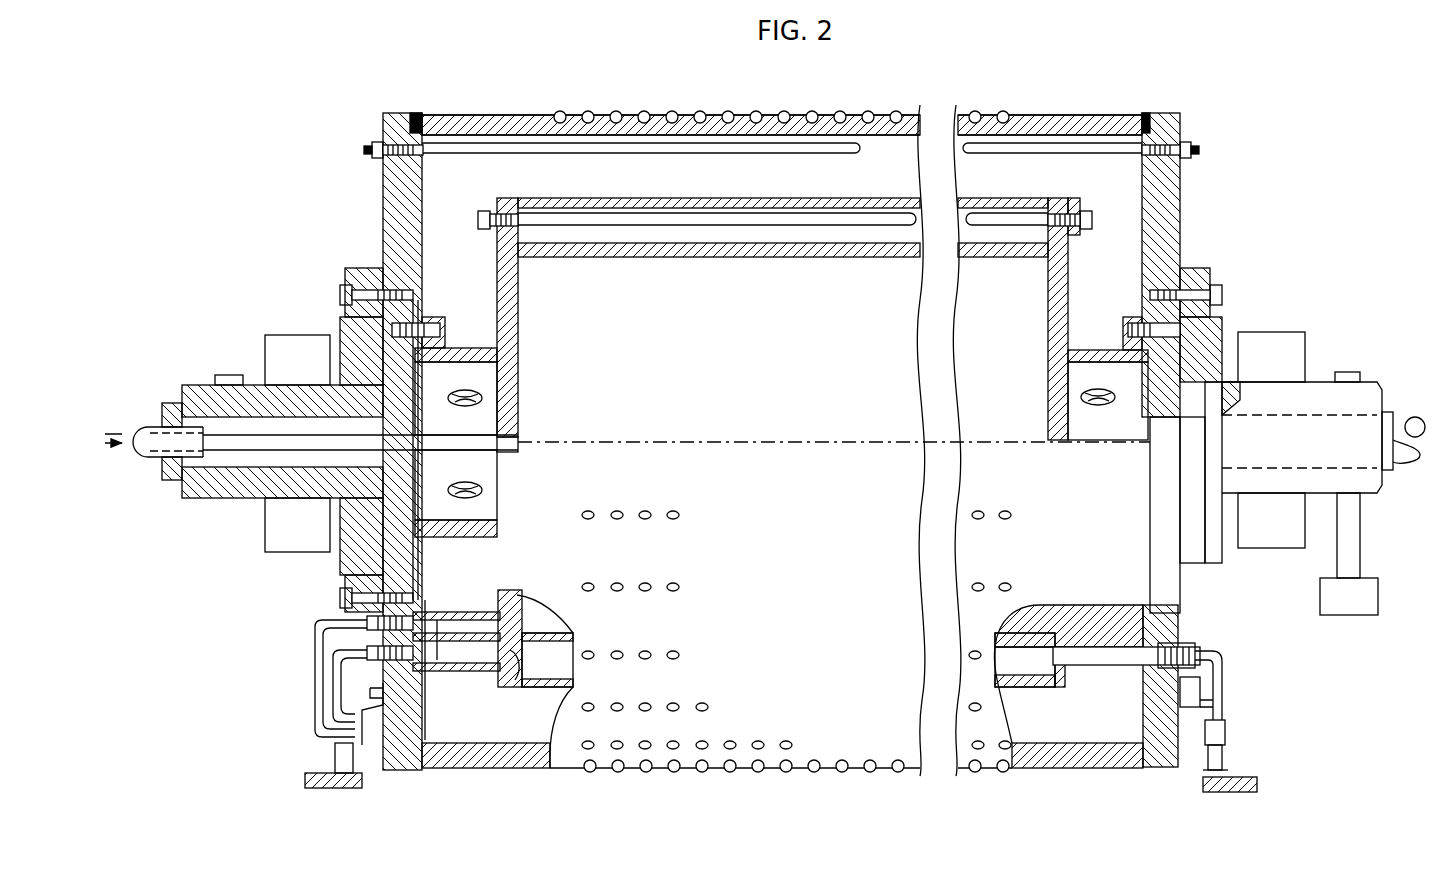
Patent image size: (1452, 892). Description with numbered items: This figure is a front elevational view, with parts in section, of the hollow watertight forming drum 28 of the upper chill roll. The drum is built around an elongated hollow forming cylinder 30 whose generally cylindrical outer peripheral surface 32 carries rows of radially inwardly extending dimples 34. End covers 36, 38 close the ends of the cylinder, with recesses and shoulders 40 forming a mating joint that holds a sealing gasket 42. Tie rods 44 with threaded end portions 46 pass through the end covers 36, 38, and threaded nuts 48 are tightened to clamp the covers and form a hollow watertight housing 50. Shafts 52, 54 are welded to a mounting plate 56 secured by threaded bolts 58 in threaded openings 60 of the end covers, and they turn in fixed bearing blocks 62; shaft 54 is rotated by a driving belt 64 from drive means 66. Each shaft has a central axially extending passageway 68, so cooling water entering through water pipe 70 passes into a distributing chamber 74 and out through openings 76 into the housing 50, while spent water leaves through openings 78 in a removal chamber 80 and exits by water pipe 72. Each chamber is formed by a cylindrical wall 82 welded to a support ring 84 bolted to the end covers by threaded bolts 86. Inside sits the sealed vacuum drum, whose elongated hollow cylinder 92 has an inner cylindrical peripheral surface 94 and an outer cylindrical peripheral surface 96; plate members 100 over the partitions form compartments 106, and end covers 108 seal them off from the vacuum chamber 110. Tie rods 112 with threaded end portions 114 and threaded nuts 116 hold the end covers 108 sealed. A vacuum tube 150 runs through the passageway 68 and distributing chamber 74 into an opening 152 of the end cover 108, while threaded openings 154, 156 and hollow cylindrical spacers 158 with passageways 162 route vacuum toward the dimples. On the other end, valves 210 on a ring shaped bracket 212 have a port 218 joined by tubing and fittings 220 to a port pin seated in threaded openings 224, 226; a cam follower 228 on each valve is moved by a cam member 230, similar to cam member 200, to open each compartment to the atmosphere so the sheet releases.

The hollow watertight forming drum 28 is at (978, 88).
The elongated hollow forming cylinder 30 is at (923, 108).
The outer peripheral surface 32 is at (862, 114).
The dimples 34 is at (598, 115).
The end cover 36 is at (392, 113).
The end cover 38 is at (1165, 113).
The recesses and shoulders 40 is at (445, 95).
The sealing gasket 42 is at (425, 120).
The tie rods 44 is at (684, 150).
The threaded end portions 46 is at (366, 156).
The threaded nuts 48 is at (375, 142).
The hollow watertight housing 50 is at (470, 187).
The shaft 52 is at (210, 385).
The shaft 54 is at (1370, 384).
The mounting plate 56 is at (362, 268).
The threaded bolts 58 is at (340, 288).
The threaded openings 60 is at (392, 290).
The fixed bearing blocks 62 is at (280, 547).
The driving belt 64 is at (1362, 549).
The drive means 66 is at (1378, 598).
The central axially extending passageway 68 is at (300, 475).
The water pipe 70 is at (160, 405).
The water pipe 72 is at (1398, 470).
The distributing chamber 74 is at (424, 427).
The openings 76 is at (450, 396).
The openings 78 is at (1100, 390).
The removal chamber 80 is at (650, 190).
The cylindrical wall 82 is at (462, 349).
The support ring 84 is at (445, 325).
The threaded bolts 86 is at (410, 325).
The elongated hollow cylinder 92 is at (818, 258).
The inner cylindrical peripheral surface 94 is at (712, 258).
The outer cylindrical peripheral surface 96 is at (752, 243).
The plate member 100 is at (680, 205).
The compartments 106 is at (542, 667).
The end covers 108 is at (518, 296).
The vacuum chamber 110 is at (622, 374).
The tie rods 112 is at (825, 215).
The threaded end portions 114 is at (480, 220).
The threaded nuts 116 is at (492, 230).
The vacuum tube 150 is at (288, 440).
The opening 152 is at (522, 440).
The threaded opening 154 is at (516, 690).
The threaded openings 156 is at (528, 610).
The hollow cylindrical spacers 158 is at (455, 612).
The passageways 162 is at (432, 612).
The cam member 200 is at (362, 780).
The valves 210 is at (1222, 755).
The ring shaped bracket 212 is at (1225, 730).
The port 218 is at (1225, 720).
The tubing and fittings 220 is at (1224, 661).
The threaded opening 224 is at (1195, 650).
The threaded opening 226 is at (1068, 675).
The cam follower 228 is at (1230, 772).
The cam member 230 is at (1203, 783).